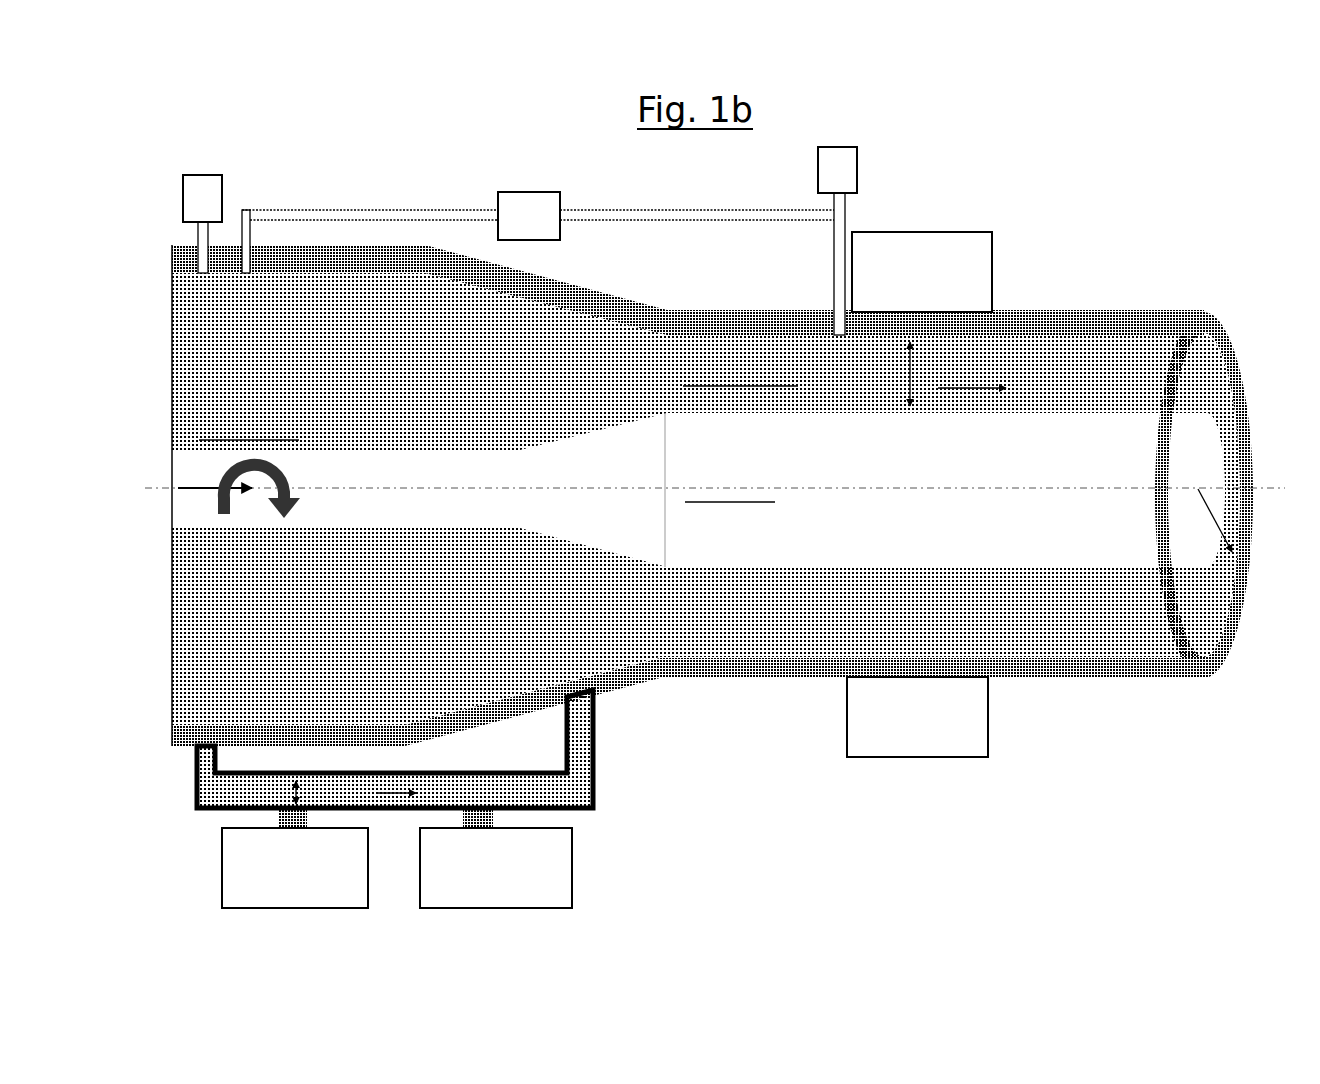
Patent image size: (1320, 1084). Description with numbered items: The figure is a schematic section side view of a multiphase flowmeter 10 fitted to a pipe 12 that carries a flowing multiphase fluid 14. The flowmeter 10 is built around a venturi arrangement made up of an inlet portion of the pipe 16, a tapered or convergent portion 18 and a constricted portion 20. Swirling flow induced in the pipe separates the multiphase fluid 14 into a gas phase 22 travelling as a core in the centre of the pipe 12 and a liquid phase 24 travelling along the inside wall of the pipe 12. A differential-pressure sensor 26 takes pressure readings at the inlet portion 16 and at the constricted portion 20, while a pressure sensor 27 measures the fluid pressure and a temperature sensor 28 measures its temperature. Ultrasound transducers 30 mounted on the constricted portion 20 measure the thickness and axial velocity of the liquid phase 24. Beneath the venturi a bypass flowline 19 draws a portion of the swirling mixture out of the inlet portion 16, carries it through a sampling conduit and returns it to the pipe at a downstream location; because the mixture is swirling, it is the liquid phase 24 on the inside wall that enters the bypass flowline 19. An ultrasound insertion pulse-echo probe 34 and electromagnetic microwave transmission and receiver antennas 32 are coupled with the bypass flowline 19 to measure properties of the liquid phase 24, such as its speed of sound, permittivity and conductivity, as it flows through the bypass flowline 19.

The multiphase flowmeter 10 is at (715, 502).
The pipe 12 is at (650, 672).
The multiphase fluid 14 is at (286, 395).
The inlet portion of the pipe 16 is at (303, 245).
The tapered or convergent portion 18 is at (528, 700).
The bypass flowline 19 is at (583, 793).
The constricted portion 20 is at (1095, 670).
The gas phase 22 is at (1108, 473).
The liquid phase 24 is at (1100, 383).
The differential-pressure sensor 26 is at (544, 192).
The pressure sensor 27 is at (855, 150).
The temperature sensor 28 is at (217, 178).
The ultrasound transducers 30 is at (944, 232).
The microwave transmission and receiver antennas 32 is at (565, 840).
The ultrasound insertion pulse-echo probe 34 is at (360, 838).